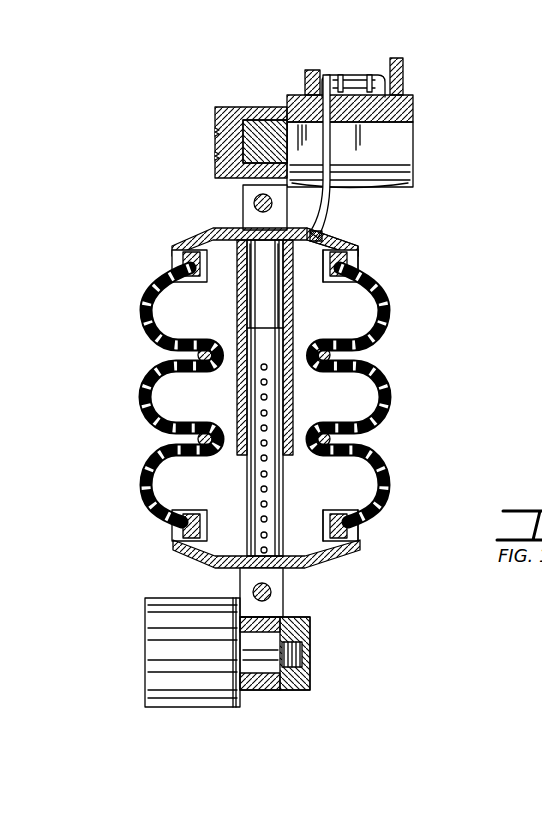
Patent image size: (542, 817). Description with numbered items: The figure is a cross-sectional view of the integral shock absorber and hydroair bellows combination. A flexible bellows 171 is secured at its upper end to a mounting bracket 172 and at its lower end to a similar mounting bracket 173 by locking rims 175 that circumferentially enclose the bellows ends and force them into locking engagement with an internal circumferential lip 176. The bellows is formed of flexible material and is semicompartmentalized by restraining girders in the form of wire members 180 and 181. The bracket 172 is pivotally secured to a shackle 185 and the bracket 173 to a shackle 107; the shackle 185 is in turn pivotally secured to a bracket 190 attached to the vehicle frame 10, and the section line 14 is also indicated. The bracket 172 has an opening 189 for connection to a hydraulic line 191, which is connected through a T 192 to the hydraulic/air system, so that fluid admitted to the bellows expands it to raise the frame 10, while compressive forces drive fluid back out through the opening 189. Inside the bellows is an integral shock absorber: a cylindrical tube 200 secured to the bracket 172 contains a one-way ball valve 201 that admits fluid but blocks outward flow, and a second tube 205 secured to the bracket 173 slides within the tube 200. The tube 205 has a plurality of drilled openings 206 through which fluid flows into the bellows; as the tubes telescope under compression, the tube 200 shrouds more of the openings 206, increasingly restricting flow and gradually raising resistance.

The vehicle frame 10 is at (404, 70).
The section line 14- 14 is at (266, 92).
The shackle 107 is at (277, 607).
The bellows 171 is at (130, 390).
The mounting bracket 172 is at (350, 244).
The mounting bracket 173 is at (353, 558).
The locking rim 175 is at (358, 267).
The clamp groove 176 is at (327, 263).
The wire member 180 is at (331, 354).
The wire member 181 is at (335, 440).
The shackle 185 is at (243, 191).
The opening 189 is at (330, 227).
The bracket 190 is at (410, 140).
The hydraulic line 191 is at (377, 188).
The T 192 is at (356, 74).
The cylindrical tube 200 is at (237, 318).
The one-way ball valve 201 is at (238, 240).
The second tube 205 is at (243, 503).
The openings 206 is at (268, 494).